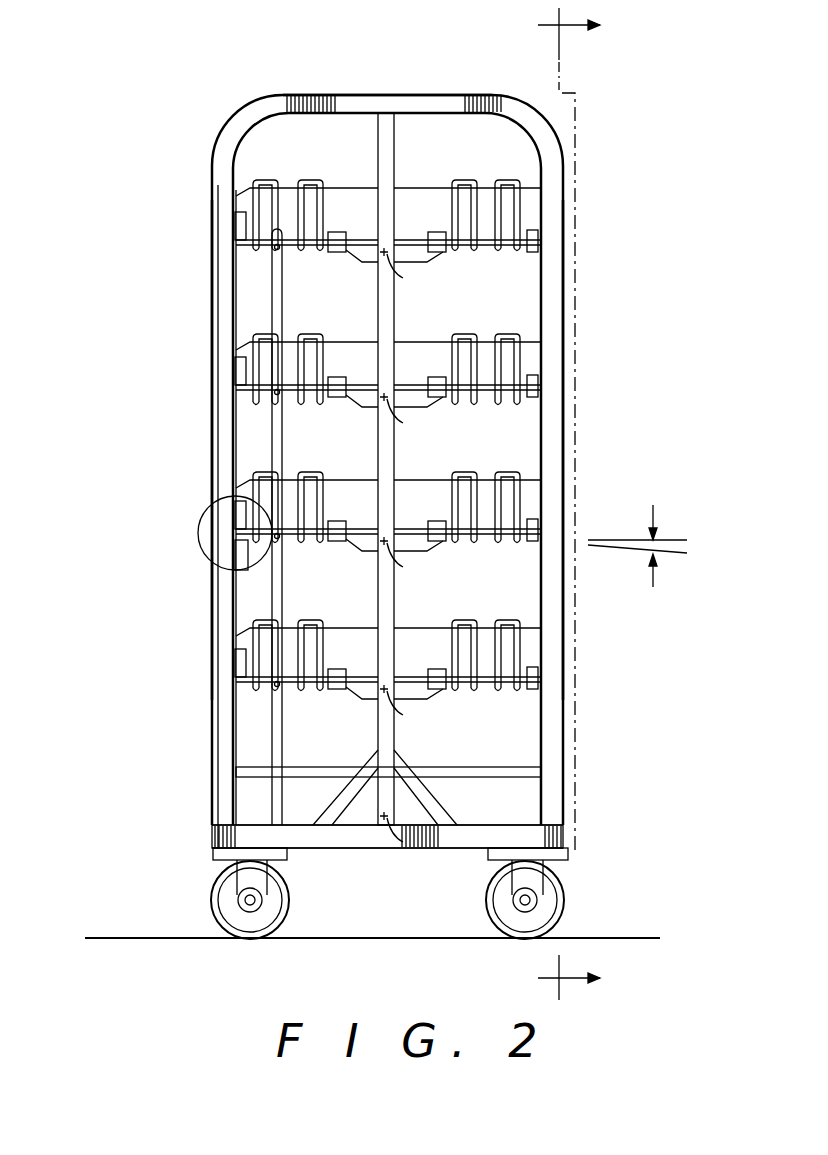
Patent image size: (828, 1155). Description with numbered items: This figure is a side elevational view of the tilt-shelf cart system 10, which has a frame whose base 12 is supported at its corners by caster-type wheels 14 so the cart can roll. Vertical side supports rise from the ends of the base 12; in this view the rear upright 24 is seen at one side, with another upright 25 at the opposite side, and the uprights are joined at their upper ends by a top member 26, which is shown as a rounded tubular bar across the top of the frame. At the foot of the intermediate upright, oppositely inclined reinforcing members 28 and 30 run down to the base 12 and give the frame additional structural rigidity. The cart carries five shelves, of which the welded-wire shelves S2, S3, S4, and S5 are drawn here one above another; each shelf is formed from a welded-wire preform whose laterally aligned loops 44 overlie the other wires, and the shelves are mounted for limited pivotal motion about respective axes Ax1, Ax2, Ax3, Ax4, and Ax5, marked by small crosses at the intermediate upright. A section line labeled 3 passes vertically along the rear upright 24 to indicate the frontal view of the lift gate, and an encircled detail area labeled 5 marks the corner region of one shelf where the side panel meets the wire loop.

The tilt-shelf cart system 10 is at (228, 106).
The base 12 is at (320, 838).
The caster-type wheels 14 is at (565, 897).
The rear upright 24 is at (565, 312).
The left side frame member 25 is at (212, 322).
The top member 26 is at (440, 100).
The reinforcing member 28 is at (362, 778).
The reinforcing member 30 is at (440, 812).
The laterally aligned loops 44 is at (276, 228).
The shelf S2 is at (361, 628).
The shelf S3 is at (361, 480).
The shelf S4 is at (361, 342).
The shelf S5 is at (361, 188).
The pivot axis Ax1 is at (421, 852).
The pivot axis Ax2 is at (421, 719).
The pivot axis Ax3 is at (422, 567).
The pivot axis Ax4 is at (422, 423).
The pivot axis Ax5 is at (422, 278).
The section line 3- 3 is at (585, 505).
The detail area 5 is at (212, 492).